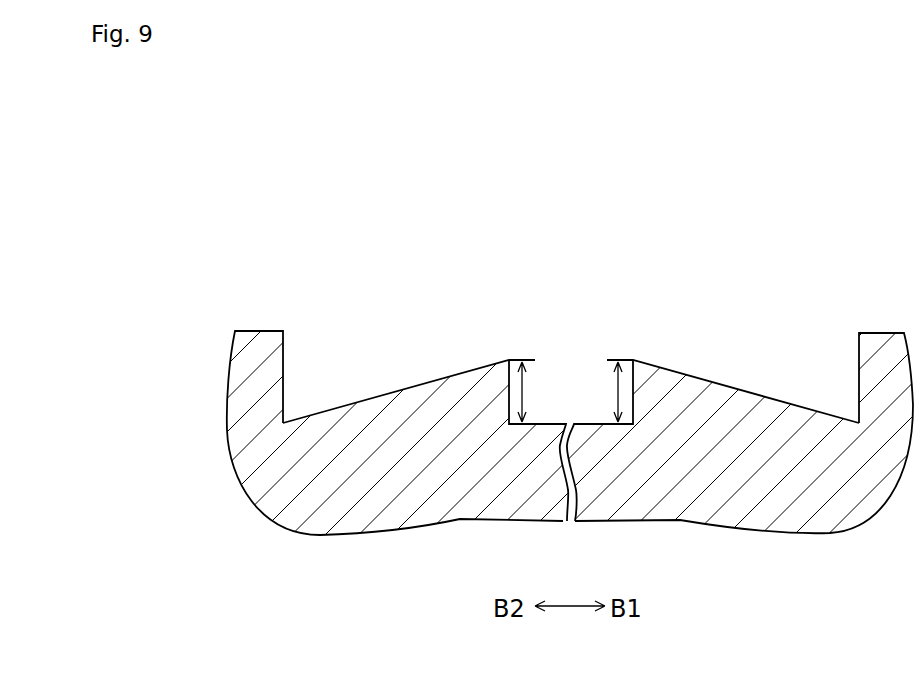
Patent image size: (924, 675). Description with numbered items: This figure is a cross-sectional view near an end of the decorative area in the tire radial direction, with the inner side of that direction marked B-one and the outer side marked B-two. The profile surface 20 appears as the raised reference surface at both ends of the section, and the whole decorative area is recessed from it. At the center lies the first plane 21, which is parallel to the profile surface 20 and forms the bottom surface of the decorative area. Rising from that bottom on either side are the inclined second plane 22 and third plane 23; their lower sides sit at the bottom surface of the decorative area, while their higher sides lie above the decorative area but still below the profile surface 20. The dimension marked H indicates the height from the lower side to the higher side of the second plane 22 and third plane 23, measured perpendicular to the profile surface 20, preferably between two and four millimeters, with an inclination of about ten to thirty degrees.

The profile surface 20 is at (264, 333).
The first plane 21 is at (581, 424).
The second plane 22 is at (389, 389).
The third plane 23 is at (748, 389).